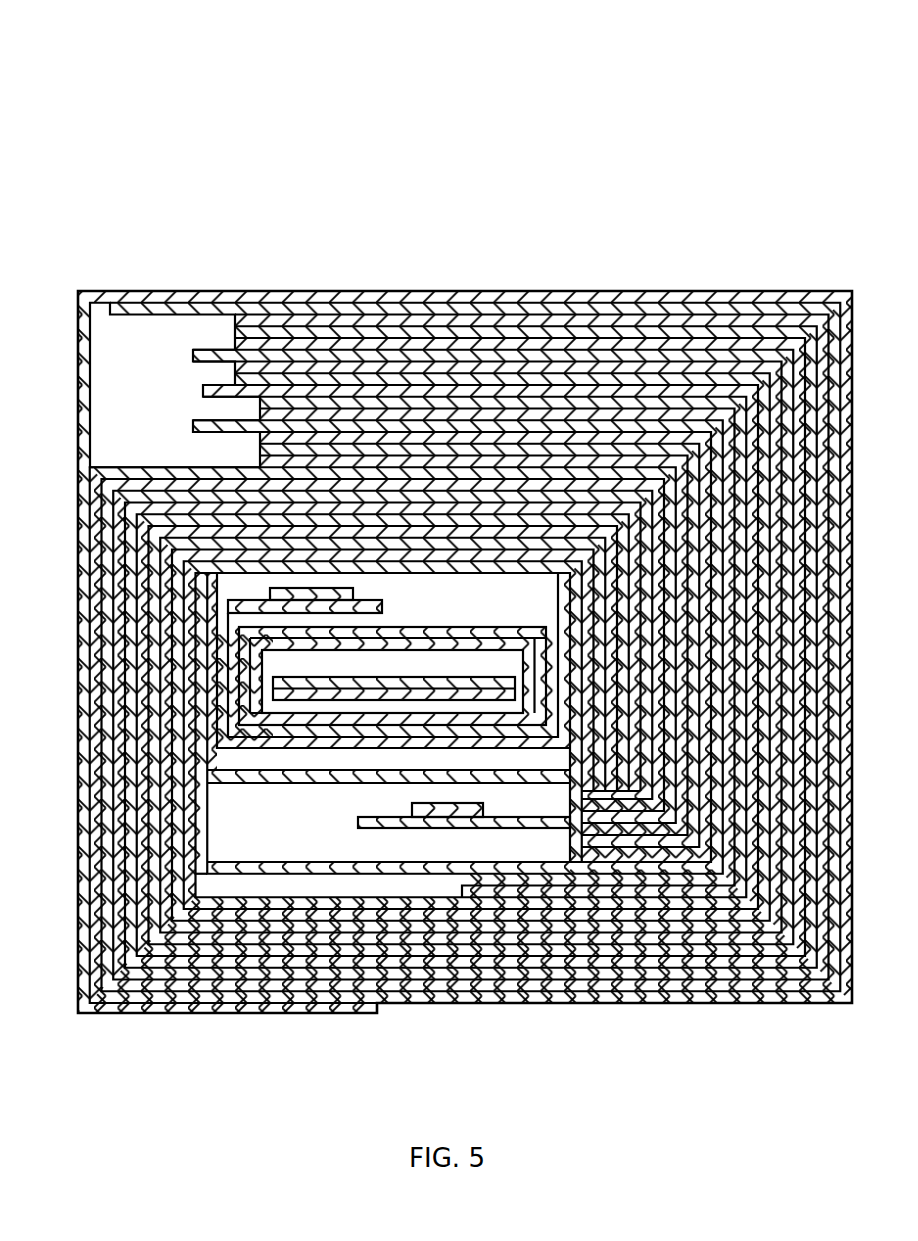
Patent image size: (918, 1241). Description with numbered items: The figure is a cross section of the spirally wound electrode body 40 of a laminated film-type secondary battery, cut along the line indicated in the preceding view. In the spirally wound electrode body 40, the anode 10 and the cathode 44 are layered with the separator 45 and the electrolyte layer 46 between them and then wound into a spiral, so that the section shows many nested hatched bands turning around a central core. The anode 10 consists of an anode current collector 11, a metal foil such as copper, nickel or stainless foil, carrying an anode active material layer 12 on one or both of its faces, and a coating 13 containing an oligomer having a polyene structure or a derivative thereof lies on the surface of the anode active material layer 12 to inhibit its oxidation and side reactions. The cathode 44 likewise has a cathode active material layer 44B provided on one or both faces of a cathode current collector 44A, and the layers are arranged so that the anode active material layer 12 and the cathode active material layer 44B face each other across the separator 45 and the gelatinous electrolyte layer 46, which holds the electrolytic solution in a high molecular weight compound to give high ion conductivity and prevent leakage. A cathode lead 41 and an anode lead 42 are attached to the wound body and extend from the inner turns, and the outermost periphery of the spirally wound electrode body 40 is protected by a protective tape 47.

The spirally wound electrode body 40 is at (728, 116).
The anode 10 is at (168, 160).
The anode current collector 11 is at (197, 312).
The anode active material layer 12 is at (286, 455).
The coating 13 is at (365, 445).
The cathode 44 is at (418, 160).
The cathode current collector 44A is at (423, 398).
The cathode active material layer 44B is at (553, 407).
The separator 45 is at (641, 358).
The electrolyte layer 46 is at (687, 437).
The protective tape 47 is at (800, 300).
The cathode lead 41 is at (297, 602).
The anode lead 42 is at (440, 818).